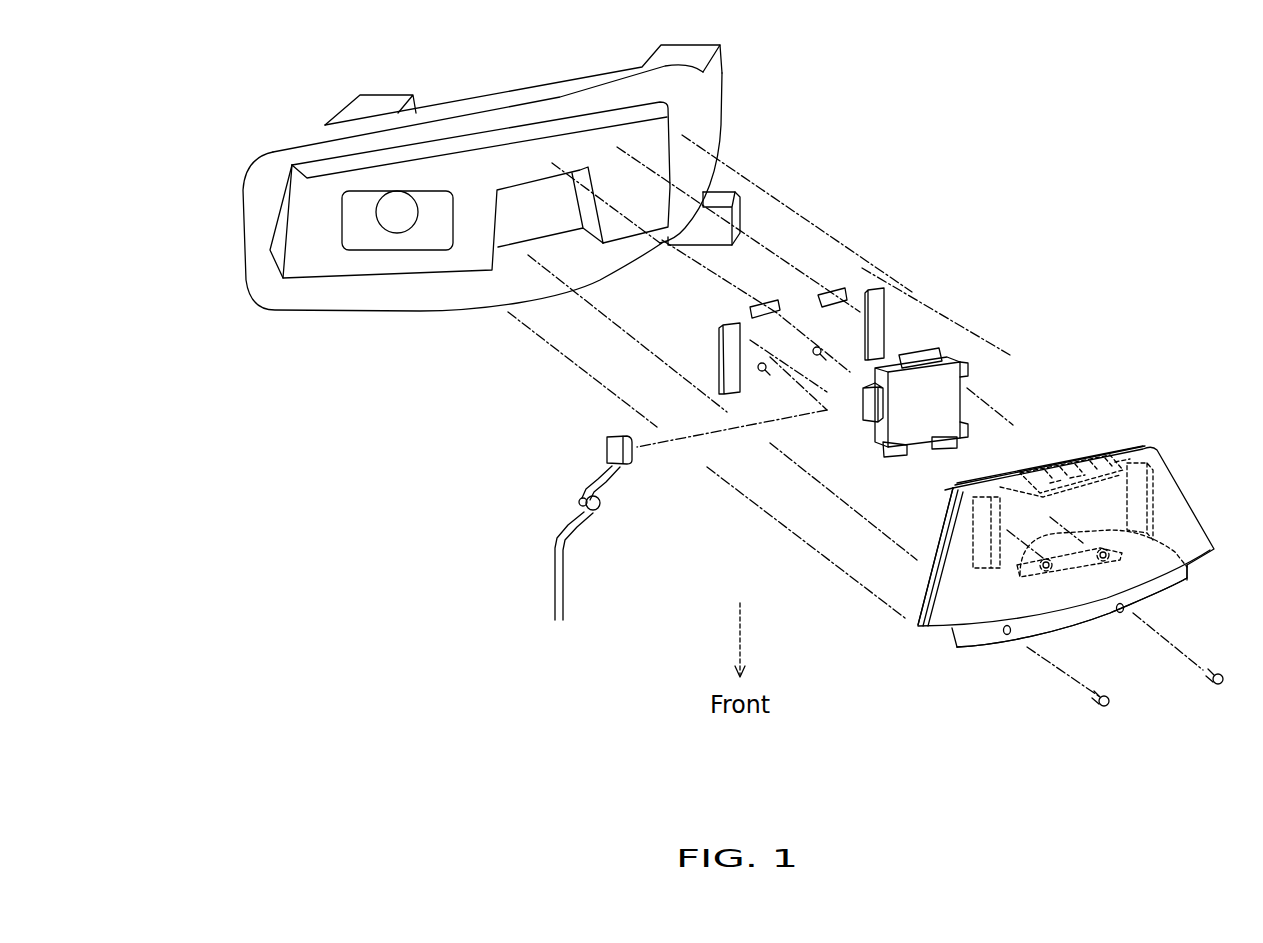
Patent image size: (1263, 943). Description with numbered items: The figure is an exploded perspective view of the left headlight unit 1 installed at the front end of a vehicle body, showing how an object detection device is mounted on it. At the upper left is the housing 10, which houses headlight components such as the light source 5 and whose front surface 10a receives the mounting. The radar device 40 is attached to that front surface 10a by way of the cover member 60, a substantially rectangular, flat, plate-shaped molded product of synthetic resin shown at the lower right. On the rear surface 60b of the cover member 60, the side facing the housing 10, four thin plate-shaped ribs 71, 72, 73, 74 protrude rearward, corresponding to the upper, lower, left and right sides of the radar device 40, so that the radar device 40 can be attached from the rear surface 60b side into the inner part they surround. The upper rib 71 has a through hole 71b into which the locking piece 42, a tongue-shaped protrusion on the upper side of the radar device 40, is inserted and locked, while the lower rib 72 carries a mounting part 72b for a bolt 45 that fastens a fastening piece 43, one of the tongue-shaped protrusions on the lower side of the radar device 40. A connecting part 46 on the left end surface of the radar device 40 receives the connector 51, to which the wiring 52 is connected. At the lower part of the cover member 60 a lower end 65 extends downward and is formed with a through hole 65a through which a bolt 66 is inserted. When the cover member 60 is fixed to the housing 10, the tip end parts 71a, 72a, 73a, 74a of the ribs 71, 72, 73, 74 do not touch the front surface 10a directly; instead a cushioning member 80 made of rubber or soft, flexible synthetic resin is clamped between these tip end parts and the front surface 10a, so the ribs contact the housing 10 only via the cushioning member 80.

The headlight unit 1 is at (951, 159).
The light source 5 is at (395, 210).
The housing 10 is at (593, 87).
The front surface 10a is at (570, 147).
The radar device 40 is at (947, 349).
The locking piece 42 is at (918, 354).
The fastening piece 43 is at (958, 449).
The bolt 45 is at (818, 347).
The connecting part 46 is at (863, 416).
The connector 51 is at (606, 450).
The wiring 52 is at (570, 523).
The cover member 60 is at (1147, 450).
The rear surface 60b is at (953, 489).
The lower end 65 is at (977, 640).
The through hole 65a is at (1123, 613).
The bolt 66 is at (1108, 708).
The upper rib 71 is at (1097, 455).
The tip end part 71a is at (1076, 455).
The through hole 71b is at (1062, 463).
The lower rib 72 is at (1073, 583).
The tip end part 72a is at (1173, 557).
The mounting part 72b is at (1140, 583).
The rib 73 is at (1160, 480).
The tip end part 73a is at (1120, 450).
The rib 74 is at (920, 577).
The tip end part 74a is at (973, 515).
The cushioning member 80 is at (763, 303).